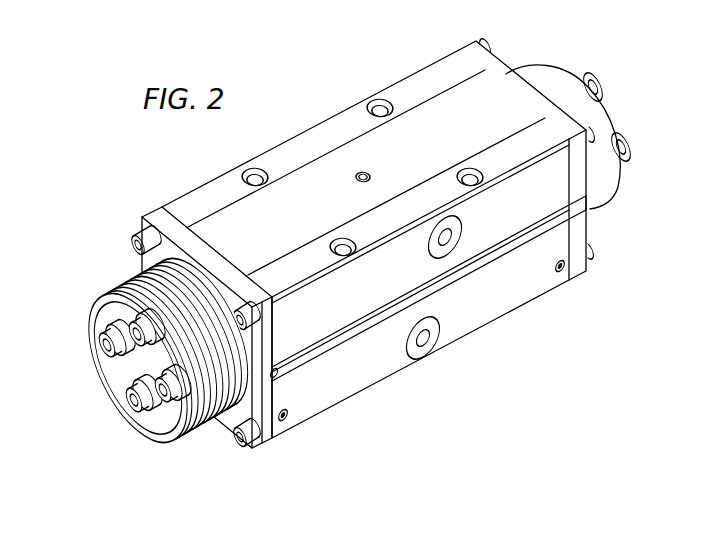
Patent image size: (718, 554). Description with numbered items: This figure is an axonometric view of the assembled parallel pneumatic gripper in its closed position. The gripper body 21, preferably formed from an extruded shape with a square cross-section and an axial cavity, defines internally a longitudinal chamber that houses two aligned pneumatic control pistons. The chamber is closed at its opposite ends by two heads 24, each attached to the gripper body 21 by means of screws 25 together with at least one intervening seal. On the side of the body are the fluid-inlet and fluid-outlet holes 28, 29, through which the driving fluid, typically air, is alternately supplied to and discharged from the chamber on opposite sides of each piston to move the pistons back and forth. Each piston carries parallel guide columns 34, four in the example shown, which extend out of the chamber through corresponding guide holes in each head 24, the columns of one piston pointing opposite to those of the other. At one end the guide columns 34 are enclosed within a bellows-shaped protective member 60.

The gripper body 21 is at (366, 382).
The head 24 is at (597, 205).
The screw 25 is at (243, 447).
The fluid-inlet hole 28 is at (425, 340).
The fluid-outlet hole 29 is at (457, 250).
The guide column 34 is at (628, 138).
The bellows-shaped protective member 60 is at (157, 442).